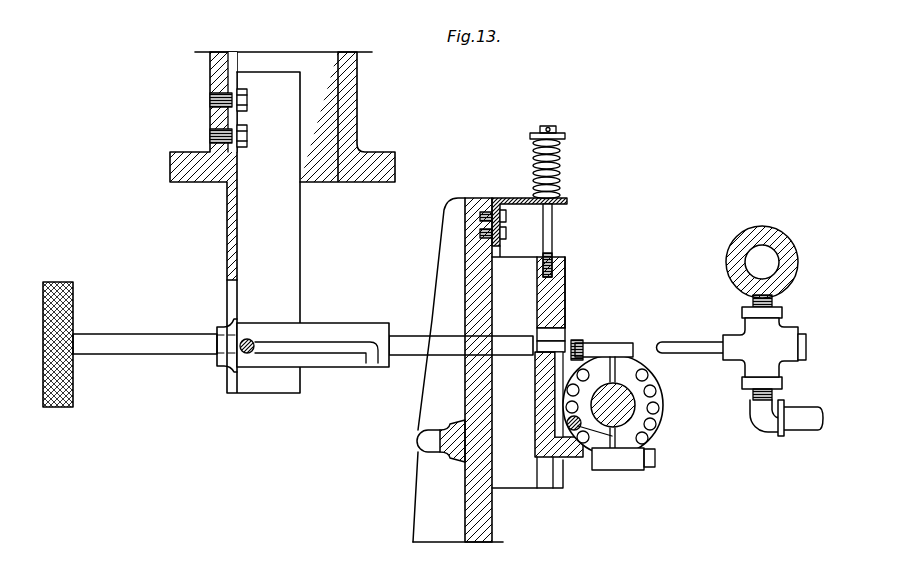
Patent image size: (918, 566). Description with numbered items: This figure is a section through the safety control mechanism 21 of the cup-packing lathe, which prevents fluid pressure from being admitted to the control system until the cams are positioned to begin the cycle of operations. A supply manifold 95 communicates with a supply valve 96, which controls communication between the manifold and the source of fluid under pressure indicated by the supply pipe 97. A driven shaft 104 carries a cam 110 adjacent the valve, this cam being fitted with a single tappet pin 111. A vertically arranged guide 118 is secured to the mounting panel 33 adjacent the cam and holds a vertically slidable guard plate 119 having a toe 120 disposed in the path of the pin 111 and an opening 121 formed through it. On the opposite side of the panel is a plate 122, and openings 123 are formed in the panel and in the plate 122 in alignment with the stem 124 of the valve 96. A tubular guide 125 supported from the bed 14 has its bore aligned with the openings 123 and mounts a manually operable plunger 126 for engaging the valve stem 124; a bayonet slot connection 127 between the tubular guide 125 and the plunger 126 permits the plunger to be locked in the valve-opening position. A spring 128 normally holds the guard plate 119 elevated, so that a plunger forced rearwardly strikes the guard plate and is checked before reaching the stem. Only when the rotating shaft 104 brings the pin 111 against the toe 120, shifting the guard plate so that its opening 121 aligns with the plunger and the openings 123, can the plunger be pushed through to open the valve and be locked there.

The bed 14 is at (218, 60).
The control mechanism 21 is at (488, 184).
The frame 33 is at (478, 520).
The supply manifold 95 is at (770, 236).
The supply valve 96 is at (768, 334).
The supply pipe 97 is at (803, 424).
The shaft 104 is at (620, 400).
The cam 110 is at (660, 412).
The tappet pin 111 is at (612, 434).
The guide 118 is at (512, 262).
The guard plate 119 is at (566, 287).
The toe 120 is at (573, 456).
The opening 121 is at (549, 334).
The plate 122 is at (566, 301).
The openings 123 is at (556, 342).
The valve stem 124 is at (690, 334).
The tubular guide 125 is at (317, 323).
The plunger 126 is at (170, 350).
The bayonet slot connection 127 is at (329, 348).
The spring 128 is at (557, 179).